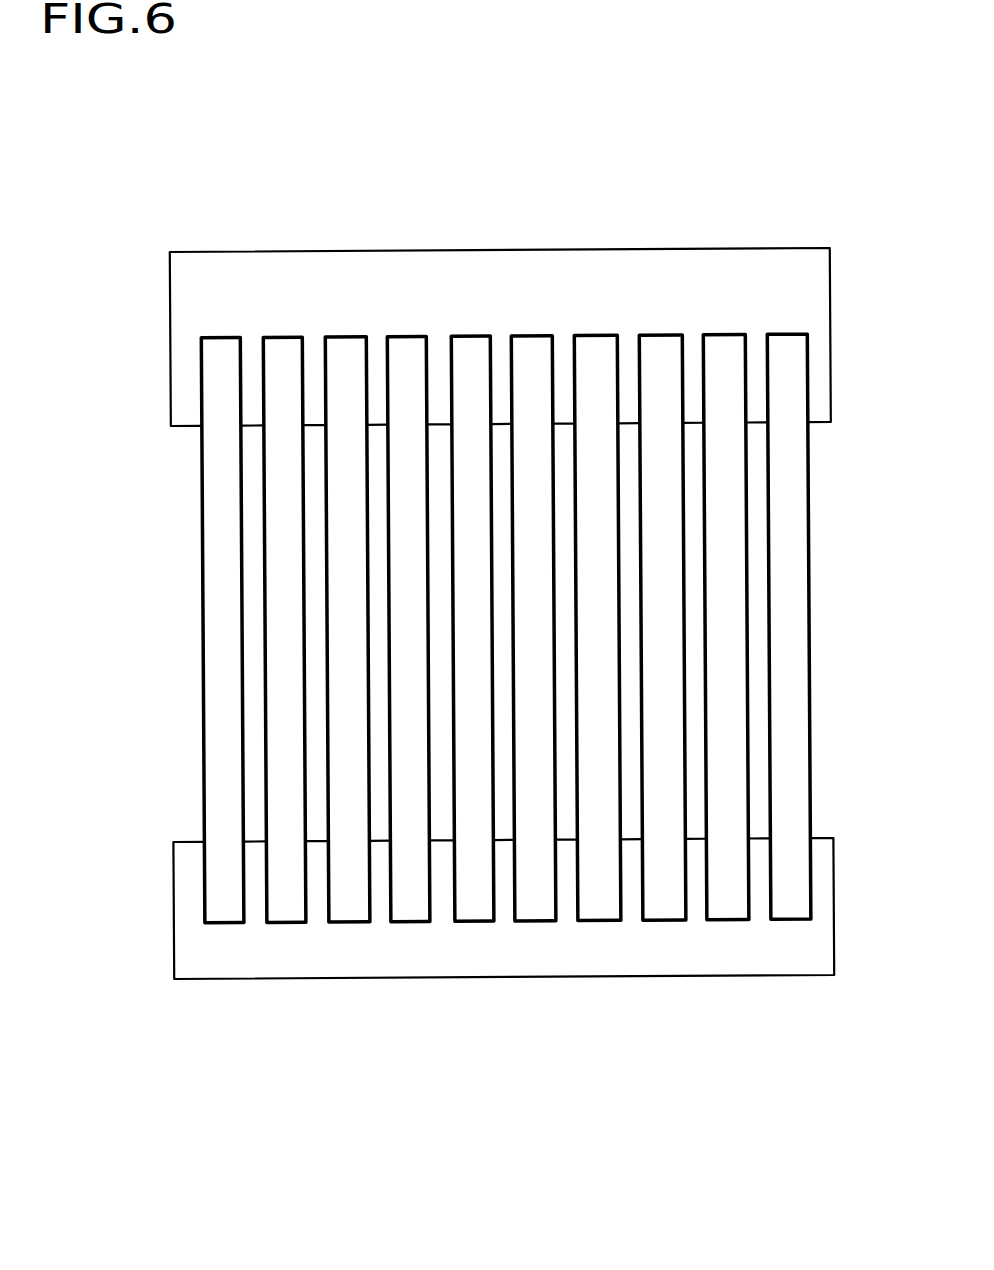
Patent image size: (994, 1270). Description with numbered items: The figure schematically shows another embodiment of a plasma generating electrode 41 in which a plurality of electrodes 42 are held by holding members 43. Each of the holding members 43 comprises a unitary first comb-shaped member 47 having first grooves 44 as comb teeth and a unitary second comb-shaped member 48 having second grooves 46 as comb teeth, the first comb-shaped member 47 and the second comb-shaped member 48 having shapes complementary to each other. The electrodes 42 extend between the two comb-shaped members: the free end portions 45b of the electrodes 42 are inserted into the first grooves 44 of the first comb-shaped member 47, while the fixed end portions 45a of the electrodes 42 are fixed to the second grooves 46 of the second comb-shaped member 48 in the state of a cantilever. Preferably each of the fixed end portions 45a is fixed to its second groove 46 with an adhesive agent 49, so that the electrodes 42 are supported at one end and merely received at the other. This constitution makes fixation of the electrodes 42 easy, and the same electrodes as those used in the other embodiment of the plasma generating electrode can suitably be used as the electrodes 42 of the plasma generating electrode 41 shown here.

The plasma generating electrode 41 is at (427, 105).
The electrodes 42 is at (290, 523).
The holding members 43 is at (797, 293).
The first grooves 44 is at (680, 300).
The fixed end portions 45a is at (467, 380).
The free end portions 45b is at (410, 363).
The second grooves 46 is at (337, 308).
The first comb-shaped member 47 is at (653, 277).
The second comb-shaped member 48 is at (353, 295).
The adhesive agent 49 is at (812, 898).